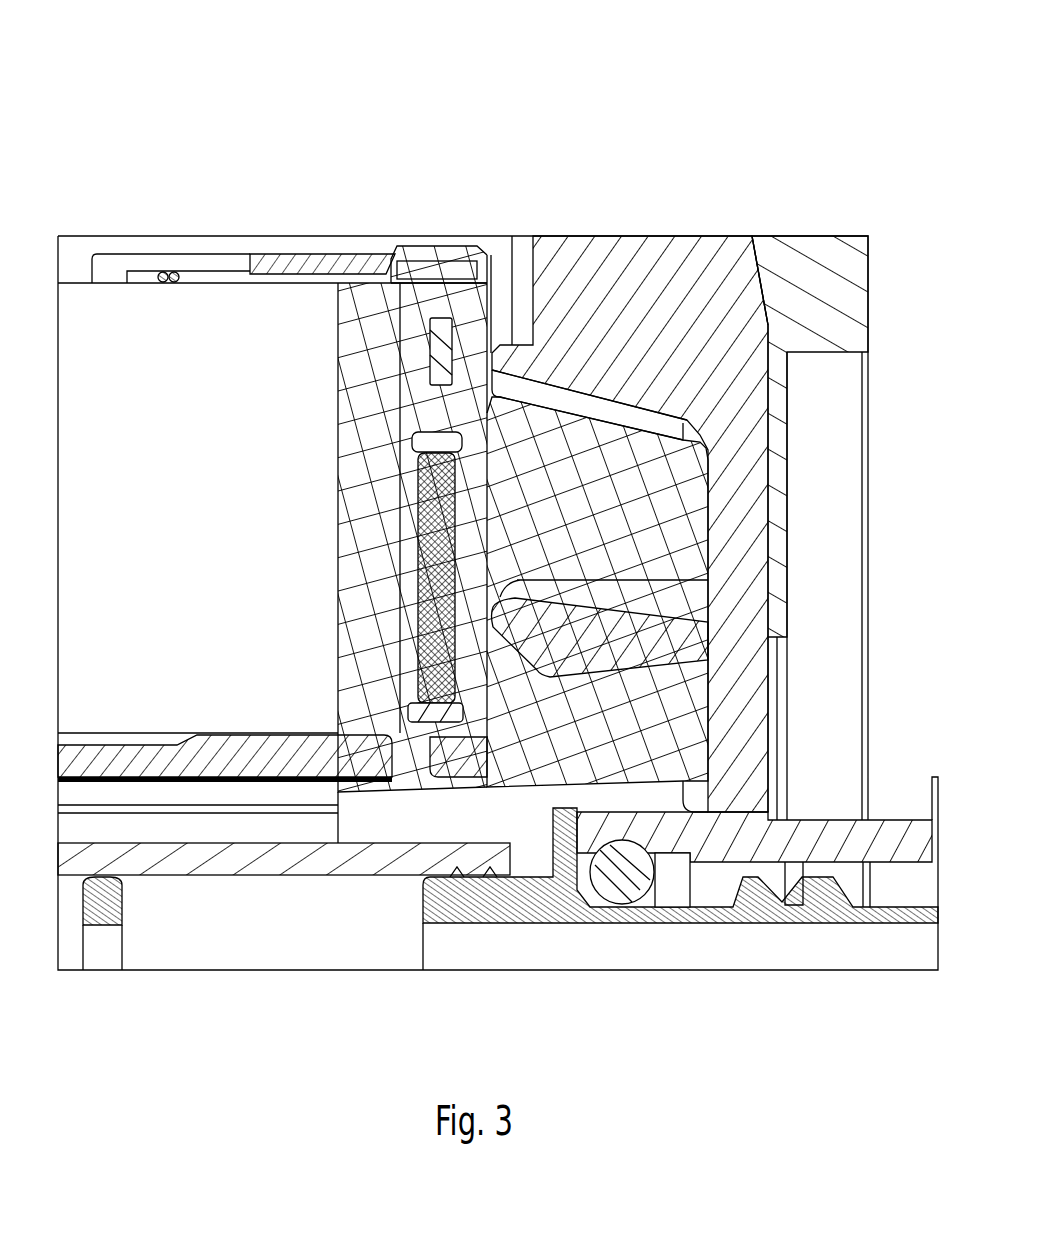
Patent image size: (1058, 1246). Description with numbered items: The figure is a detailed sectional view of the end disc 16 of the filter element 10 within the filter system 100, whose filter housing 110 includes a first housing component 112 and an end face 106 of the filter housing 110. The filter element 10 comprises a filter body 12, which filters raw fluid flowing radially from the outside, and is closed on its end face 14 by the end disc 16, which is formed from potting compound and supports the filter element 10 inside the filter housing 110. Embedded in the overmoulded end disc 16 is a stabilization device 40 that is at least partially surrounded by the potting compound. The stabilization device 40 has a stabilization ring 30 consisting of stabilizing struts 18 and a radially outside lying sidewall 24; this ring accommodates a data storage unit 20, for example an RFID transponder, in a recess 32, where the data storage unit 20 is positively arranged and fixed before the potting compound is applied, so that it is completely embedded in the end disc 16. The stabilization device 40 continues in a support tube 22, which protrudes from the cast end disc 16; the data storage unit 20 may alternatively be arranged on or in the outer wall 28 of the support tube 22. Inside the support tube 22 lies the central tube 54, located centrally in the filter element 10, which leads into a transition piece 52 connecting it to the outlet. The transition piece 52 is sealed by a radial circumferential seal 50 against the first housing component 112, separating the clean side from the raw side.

The filter system 100 is at (830, 172).
The filter housing 110 is at (618, 236).
The first housing component 112 is at (690, 255).
The end face of the filter housing 106 is at (768, 668).
The filter element 10 is at (205, 283).
The filter body 12 is at (108, 305).
The end face 14 is at (683, 438).
The end disc 16 is at (680, 522).
The stabilizing struts 18 is at (440, 350).
The data storage unit 20 is at (420, 500).
The support tube 22 is at (440, 772).
The sidewall 24 is at (375, 265).
The outer wall of the support tube 28 is at (225, 795).
The stabilization ring 30 is at (440, 440).
The recess 32 is at (420, 700).
The stabilization device 40 is at (300, 250).
The seal 50 is at (622, 890).
The transition piece 52 is at (727, 905).
The central tube 54 is at (215, 862).